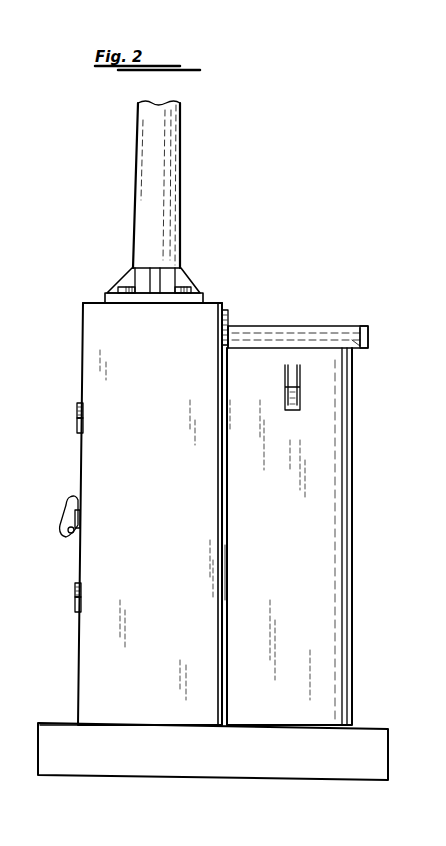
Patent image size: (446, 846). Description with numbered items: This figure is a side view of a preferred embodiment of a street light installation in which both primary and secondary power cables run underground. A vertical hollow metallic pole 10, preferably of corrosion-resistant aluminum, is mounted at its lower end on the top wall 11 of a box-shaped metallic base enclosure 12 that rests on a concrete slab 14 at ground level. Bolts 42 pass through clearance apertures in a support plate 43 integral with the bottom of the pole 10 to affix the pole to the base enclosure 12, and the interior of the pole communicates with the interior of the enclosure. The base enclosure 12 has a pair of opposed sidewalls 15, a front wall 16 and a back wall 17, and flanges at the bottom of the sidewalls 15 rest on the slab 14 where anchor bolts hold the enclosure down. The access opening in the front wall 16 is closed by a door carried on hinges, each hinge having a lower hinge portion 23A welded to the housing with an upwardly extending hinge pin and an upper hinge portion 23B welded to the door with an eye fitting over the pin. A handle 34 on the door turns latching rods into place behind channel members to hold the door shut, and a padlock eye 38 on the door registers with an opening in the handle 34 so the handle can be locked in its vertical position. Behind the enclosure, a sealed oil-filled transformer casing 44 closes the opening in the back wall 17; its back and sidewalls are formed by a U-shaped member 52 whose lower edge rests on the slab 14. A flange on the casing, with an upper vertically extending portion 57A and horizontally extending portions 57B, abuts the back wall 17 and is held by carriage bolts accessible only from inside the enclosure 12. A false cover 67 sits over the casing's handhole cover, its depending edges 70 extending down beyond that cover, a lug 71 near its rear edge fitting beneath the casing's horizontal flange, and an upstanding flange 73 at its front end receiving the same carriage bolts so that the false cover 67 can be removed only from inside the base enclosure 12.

The vertical hollow metallic pole 10 is at (181, 122).
The top wall 11 is at (95, 302).
The base enclosure 12 is at (72, 354).
The concrete slab 14 is at (145, 758).
The sidewall 15 is at (162, 643).
The front wall 16 is at (78, 714).
The back wall 17 is at (221, 590).
The lower hinge portion 23A is at (77, 426).
The upper hinge portion 23B is at (77, 410).
The handle 34 is at (70, 498).
The padlock eye 38 is at (70, 537).
The bolts 42 is at (177, 290).
The support plate 43 is at (200, 298).
The sealed transformer casing 44 is at (354, 563).
The U-shaped member 52 is at (296, 635).
The upper vertically extending flange portion 57A is at (226, 312).
The horizontally extending flange portion 57B is at (226, 543).
The false cover 67 is at (290, 327).
The depending edges 70 is at (368, 338).
The lug 71 is at (358, 349).
The upstanding flange 73 is at (232, 320).